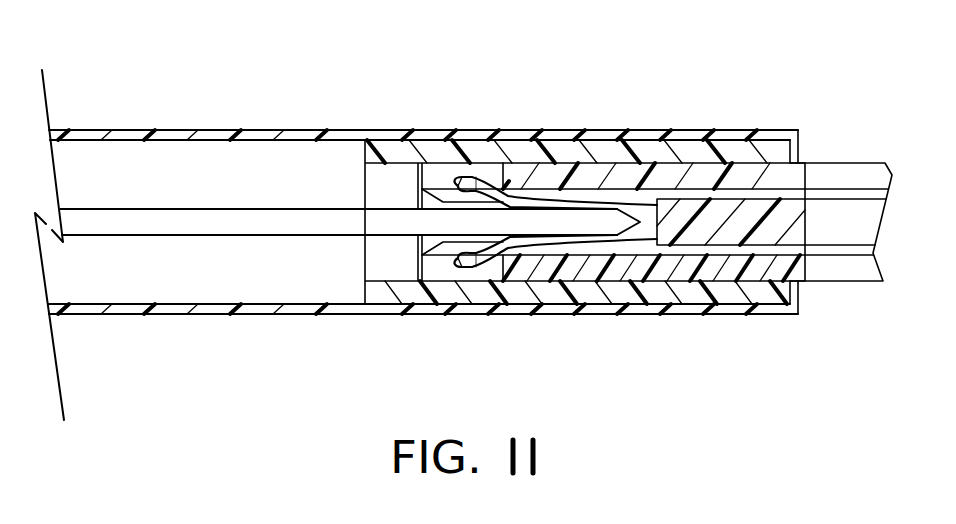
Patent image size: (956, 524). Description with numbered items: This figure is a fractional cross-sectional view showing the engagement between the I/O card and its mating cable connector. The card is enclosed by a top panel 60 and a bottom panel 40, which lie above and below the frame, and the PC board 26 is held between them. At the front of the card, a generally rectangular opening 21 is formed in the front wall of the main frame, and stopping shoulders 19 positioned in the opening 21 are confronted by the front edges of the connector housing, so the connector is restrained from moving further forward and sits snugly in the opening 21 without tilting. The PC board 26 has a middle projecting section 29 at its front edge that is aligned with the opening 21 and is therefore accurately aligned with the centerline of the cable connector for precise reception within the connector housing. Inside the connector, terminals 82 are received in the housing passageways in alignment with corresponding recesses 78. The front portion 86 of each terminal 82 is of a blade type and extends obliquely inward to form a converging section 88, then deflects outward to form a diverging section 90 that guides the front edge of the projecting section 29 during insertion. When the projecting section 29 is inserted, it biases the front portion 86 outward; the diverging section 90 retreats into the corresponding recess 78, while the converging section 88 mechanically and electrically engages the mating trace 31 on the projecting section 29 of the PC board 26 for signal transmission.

The stopping shoulders 19 is at (383, 177).
The opening 21 is at (407, 180).
The PC board 26 is at (202, 236).
The projecting section 29 is at (587, 248).
The traces 31 is at (519, 244).
The bottom panel 40 is at (298, 306).
The top panel 60 is at (265, 131).
The recesses 78 is at (475, 184).
The terminals 82 is at (733, 197).
The front portion 86 is at (575, 199).
The converging section 88 is at (513, 216).
The diverging section 90 is at (502, 178).